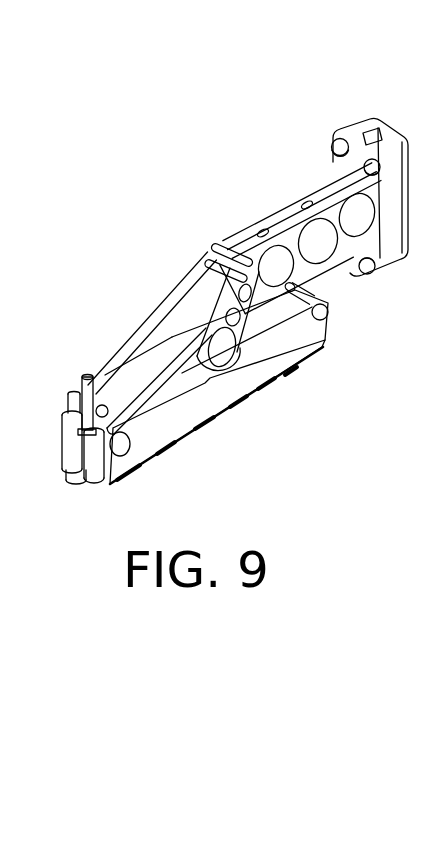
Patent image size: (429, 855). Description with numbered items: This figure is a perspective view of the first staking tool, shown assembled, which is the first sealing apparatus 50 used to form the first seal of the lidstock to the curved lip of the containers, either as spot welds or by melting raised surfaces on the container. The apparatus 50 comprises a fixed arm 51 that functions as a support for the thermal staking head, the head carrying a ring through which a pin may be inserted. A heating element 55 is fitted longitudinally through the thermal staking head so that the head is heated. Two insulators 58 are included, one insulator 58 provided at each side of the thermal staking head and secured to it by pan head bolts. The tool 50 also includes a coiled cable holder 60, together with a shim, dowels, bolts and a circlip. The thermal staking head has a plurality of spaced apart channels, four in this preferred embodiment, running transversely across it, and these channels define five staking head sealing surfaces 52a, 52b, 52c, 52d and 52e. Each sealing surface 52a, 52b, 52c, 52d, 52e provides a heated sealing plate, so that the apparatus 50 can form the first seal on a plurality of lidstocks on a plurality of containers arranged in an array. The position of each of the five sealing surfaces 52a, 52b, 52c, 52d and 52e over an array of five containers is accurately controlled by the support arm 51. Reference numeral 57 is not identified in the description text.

The first sealing apparatus 50 is at (200, 147).
The fixed arm 51 is at (355, 130).
The staking head sealing surface 52a is at (137, 477).
The staking head sealing surface 52b is at (173, 450).
The staking head sealing surface 52c is at (213, 423).
The staking head sealing surface 52d is at (247, 405).
The staking head sealing surface 52e is at (287, 383).
The heating element 55 is at (193, 330).
The arm 57 is at (120, 352).
The insulator 58 is at (324, 345).
The coiled cable holder 60 is at (215, 250).